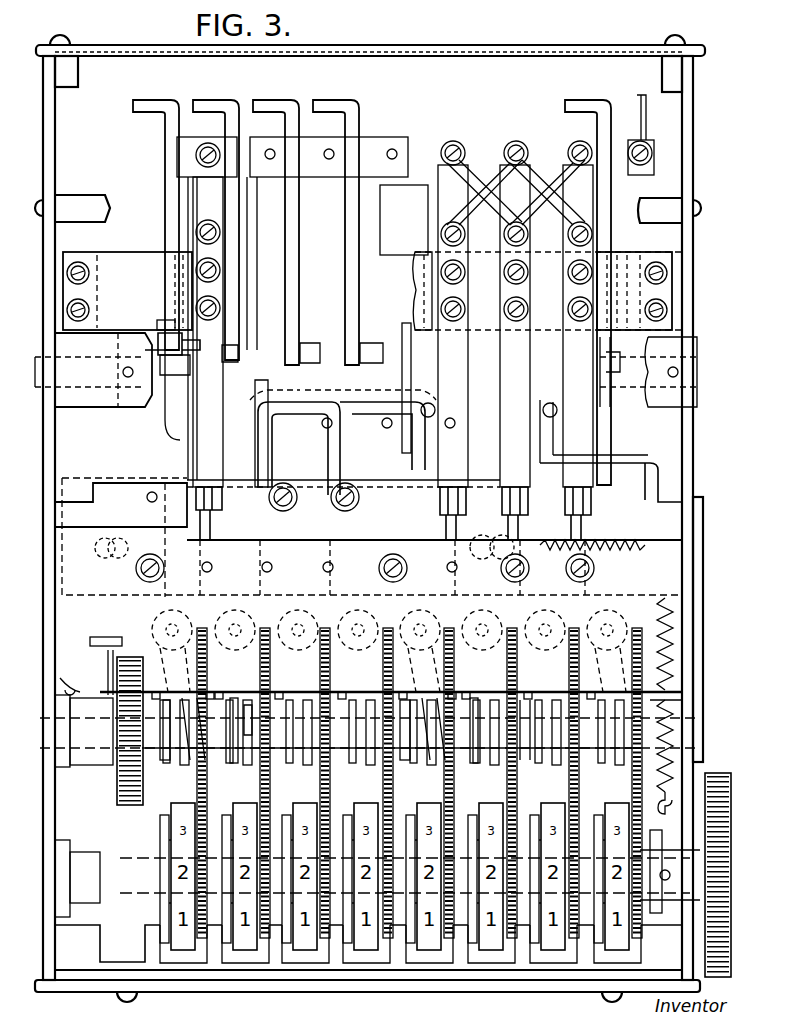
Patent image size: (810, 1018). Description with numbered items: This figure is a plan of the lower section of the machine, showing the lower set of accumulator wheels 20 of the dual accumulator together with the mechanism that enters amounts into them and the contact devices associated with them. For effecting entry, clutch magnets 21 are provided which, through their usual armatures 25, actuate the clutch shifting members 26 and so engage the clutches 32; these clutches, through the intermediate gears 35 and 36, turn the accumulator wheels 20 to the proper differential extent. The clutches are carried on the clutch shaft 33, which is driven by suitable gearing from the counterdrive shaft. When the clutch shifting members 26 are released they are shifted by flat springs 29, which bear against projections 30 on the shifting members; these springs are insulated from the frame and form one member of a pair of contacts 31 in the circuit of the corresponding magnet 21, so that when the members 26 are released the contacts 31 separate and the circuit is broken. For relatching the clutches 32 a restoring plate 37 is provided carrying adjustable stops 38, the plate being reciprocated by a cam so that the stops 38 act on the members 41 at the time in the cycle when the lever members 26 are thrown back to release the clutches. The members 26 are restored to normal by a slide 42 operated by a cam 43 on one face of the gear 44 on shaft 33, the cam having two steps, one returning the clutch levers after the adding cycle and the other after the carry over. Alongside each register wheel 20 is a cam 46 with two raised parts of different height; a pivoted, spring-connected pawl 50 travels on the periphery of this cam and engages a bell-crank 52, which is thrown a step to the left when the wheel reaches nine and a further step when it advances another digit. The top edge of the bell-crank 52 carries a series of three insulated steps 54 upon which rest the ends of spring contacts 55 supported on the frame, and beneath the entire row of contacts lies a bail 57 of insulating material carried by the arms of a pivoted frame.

The lower accumulator wheels 20 is at (370, 810).
The clutch magnets 21 is at (412, 203).
The armatures 25 is at (270, 412).
The clutch shifting members 26 is at (418, 452).
The flat springs 29 is at (178, 352).
The projections 30 is at (165, 318).
The contacts 31 is at (178, 362).
The clutches 32 is at (162, 760).
The clutch shaft 33 is at (302, 745).
The intermediate gear 35 is at (262, 775).
The intermediate gear 36 is at (272, 828).
The restoring plate 37 is at (68, 490).
The adjustable stops 38 is at (283, 511).
The members 41 is at (270, 455).
The slide 42 is at (108, 690).
The cam 43 is at (112, 685).
The gear 44 is at (116, 782).
The cam 46 is at (595, 765).
The pawl 50 is at (590, 800).
The bell-crank 52 is at (585, 680).
The steps 54 is at (216, 512).
The spring contact 55 is at (222, 355).
The bail 57 is at (140, 443).